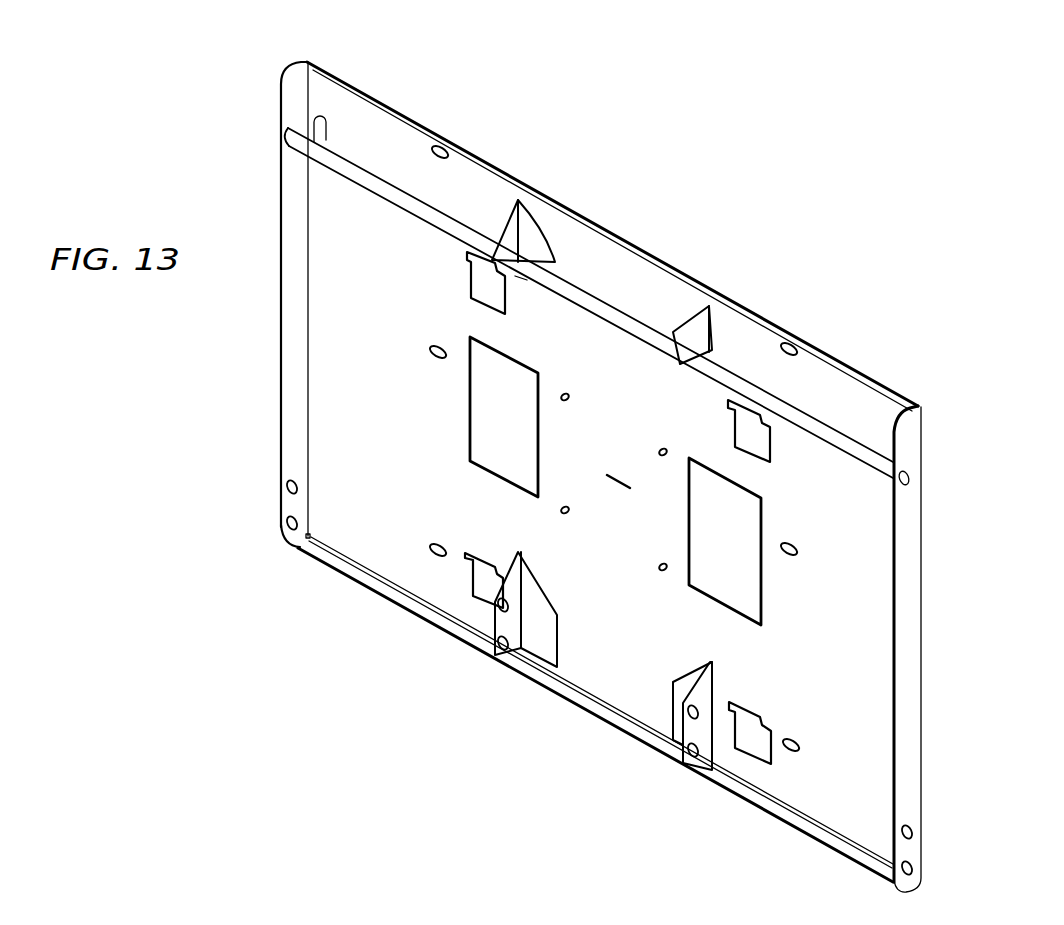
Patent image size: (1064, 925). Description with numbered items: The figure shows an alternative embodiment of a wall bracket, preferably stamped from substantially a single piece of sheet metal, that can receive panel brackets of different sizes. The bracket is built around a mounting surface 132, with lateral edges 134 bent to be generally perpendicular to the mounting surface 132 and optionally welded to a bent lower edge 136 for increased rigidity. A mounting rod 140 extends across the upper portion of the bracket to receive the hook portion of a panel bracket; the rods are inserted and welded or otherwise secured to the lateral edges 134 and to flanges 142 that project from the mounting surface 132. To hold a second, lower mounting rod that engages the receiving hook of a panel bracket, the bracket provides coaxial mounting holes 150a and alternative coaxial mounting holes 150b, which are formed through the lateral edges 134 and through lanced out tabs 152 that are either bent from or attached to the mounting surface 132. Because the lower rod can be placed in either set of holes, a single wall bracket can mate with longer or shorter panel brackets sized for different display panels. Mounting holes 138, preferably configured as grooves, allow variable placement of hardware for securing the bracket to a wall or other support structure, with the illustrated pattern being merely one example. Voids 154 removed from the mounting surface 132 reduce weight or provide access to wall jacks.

The mounting surface 132 is at (482, 192).
The lateral edges 134 is at (910, 512).
The bent lower edge 136 is at (388, 585).
The mounting holes 138 is at (431, 544).
The mounting rod 140 is at (340, 162).
The flanges 142 is at (517, 232).
The coaxial mounting holes 150a is at (298, 492).
The alternative coaxial mounting holes 150b is at (298, 545).
The lanced out tabs 152 is at (522, 606).
The voids 154 is at (718, 528).